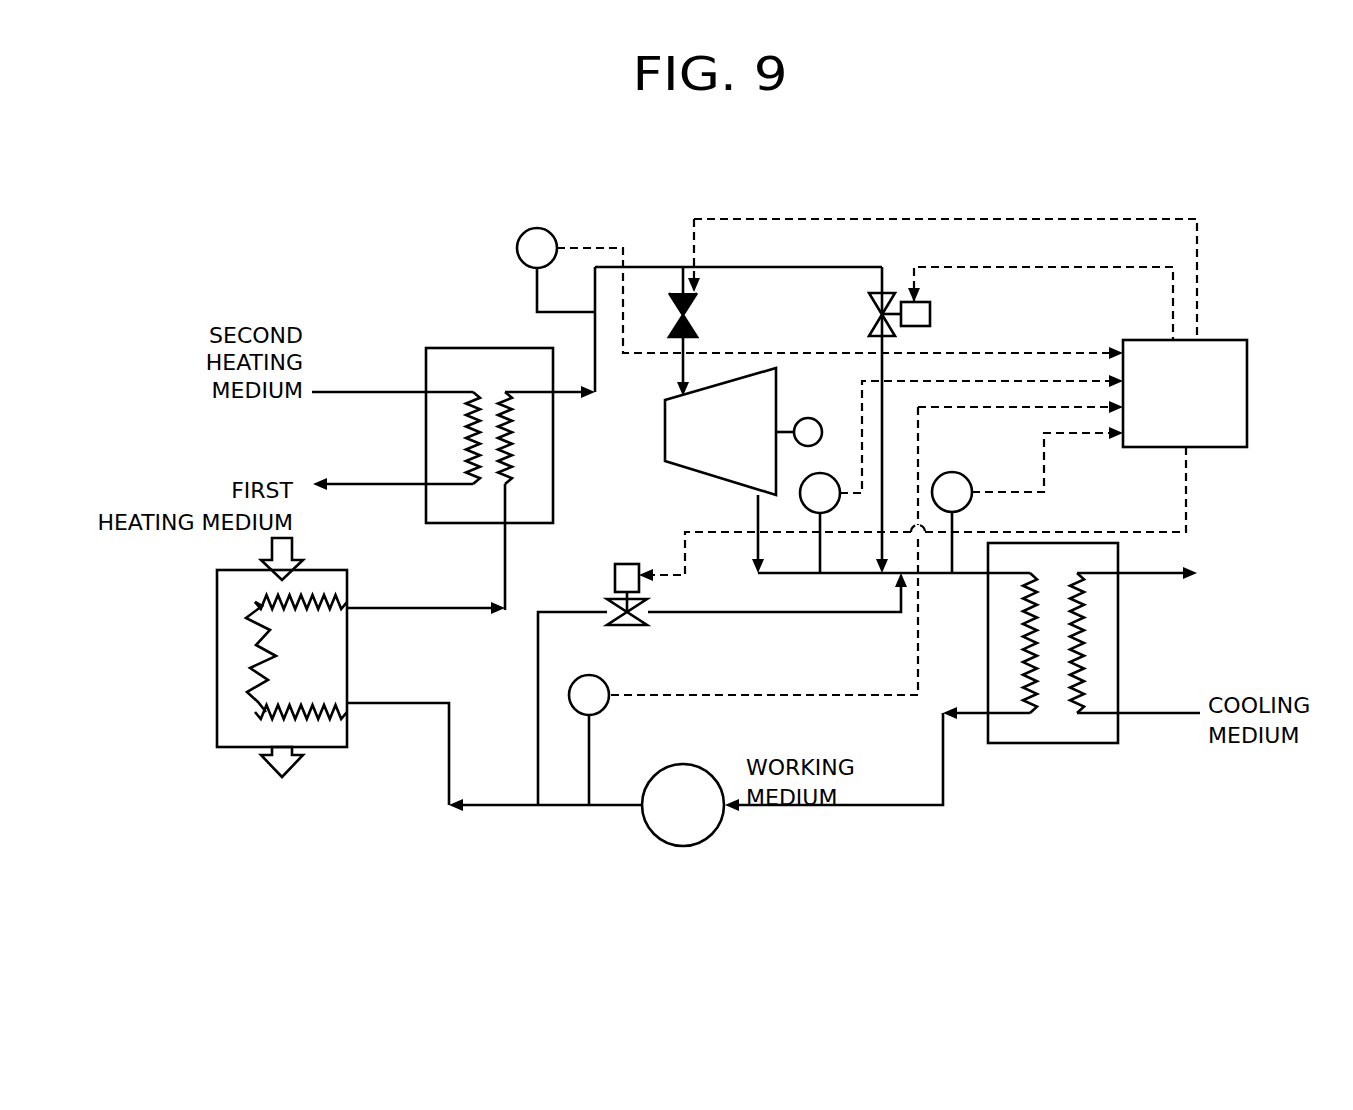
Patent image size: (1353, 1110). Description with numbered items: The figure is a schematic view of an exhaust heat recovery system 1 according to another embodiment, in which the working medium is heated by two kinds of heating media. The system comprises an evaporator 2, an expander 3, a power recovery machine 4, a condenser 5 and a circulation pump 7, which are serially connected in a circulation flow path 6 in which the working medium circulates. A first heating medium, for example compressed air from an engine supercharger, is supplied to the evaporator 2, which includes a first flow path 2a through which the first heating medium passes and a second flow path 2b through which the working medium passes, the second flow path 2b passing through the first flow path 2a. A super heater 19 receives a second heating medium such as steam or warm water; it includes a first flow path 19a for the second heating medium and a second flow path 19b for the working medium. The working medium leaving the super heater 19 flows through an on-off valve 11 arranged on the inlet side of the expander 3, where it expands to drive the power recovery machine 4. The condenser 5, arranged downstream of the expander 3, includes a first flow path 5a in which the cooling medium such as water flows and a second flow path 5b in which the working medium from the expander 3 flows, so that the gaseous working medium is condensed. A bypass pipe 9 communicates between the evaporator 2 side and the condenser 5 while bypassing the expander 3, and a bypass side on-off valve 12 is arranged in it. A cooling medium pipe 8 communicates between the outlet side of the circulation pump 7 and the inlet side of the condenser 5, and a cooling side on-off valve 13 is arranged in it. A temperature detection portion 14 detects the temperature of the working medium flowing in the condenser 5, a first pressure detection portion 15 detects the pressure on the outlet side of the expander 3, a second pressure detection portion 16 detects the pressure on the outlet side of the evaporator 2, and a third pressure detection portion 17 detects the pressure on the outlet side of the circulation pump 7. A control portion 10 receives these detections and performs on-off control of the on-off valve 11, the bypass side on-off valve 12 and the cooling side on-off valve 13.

The exhaust heat recovery system 1 is at (1232, 222).
The evaporator 2 is at (264, 657).
The first flow path 2a is at (232, 582).
The second flow path 2b is at (258, 640).
The expander 3 is at (665, 416).
The power recovery machine 4 is at (815, 420).
The condenser 5 is at (1057, 643).
The first flow path 5a is at (1077, 632).
The second flow path 5b is at (1030, 632).
The circulation flow path 6 is at (497, 808).
The circulation pump 7 is at (690, 766).
The cooling medium pipe 8 is at (538, 660).
The bypass pipe 9 is at (820, 267).
The control portion 10 is at (1220, 340).
The on-off valve 11 is at (697, 318).
The bypass side on-off valve 12 is at (930, 313).
The cooling side on-off valve 13 is at (627, 564).
The temperature detection portion 14 is at (957, 471).
The first pressure detection portion 15 is at (832, 474).
The second pressure detection portion 16 is at (550, 229).
The third pressure detection portion 17 is at (599, 676).
The super heater 19 is at (489, 418).
The first flow path 19a is at (473, 437).
The second flow path 19b is at (520, 437).